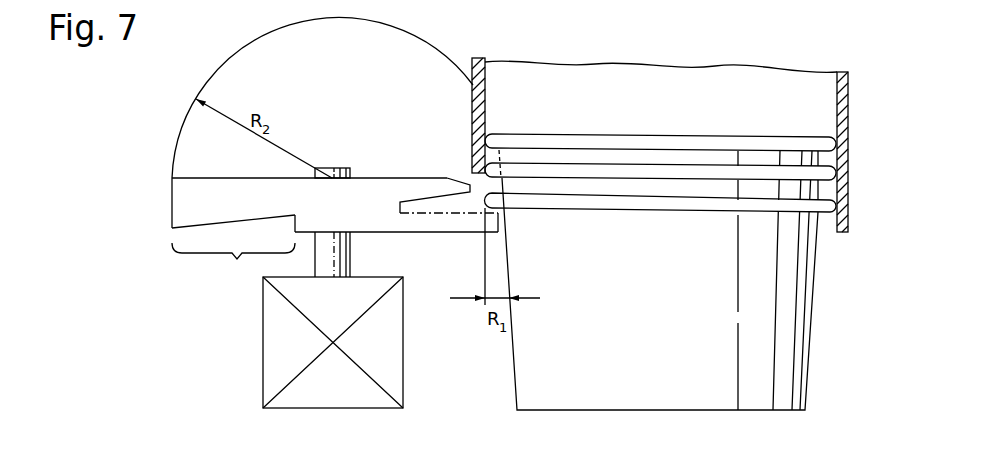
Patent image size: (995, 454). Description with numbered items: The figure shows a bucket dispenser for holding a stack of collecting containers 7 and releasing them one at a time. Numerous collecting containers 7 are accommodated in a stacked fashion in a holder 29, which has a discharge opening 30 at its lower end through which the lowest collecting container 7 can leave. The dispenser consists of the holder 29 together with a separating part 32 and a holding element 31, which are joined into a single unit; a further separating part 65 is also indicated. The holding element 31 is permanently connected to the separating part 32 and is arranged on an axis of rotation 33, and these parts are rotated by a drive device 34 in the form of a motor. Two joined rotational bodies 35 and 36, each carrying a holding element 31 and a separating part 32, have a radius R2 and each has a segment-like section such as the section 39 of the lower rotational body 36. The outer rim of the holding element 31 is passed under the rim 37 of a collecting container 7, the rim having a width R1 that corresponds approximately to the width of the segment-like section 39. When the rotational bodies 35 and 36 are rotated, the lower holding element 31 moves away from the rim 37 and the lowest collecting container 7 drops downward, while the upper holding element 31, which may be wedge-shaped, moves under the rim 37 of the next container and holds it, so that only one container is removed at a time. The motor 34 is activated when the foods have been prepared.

The collecting container 7 is at (655, 325).
The holder 29 is at (848, 220).
The discharge opening of the holder 30 is at (458, 152).
The holding element 31 is at (195, 183).
The separating part 32 is at (417, 183).
The axis of rotation 33 is at (337, 249).
The drive device 34 is at (275, 371).
The rotational body 35 is at (162, 200).
The rotational body 36 is at (285, 225).
The rim 37 is at (660, 200).
The segment-like section 39 is at (233, 266).
The separating part 65 is at (307, 220).